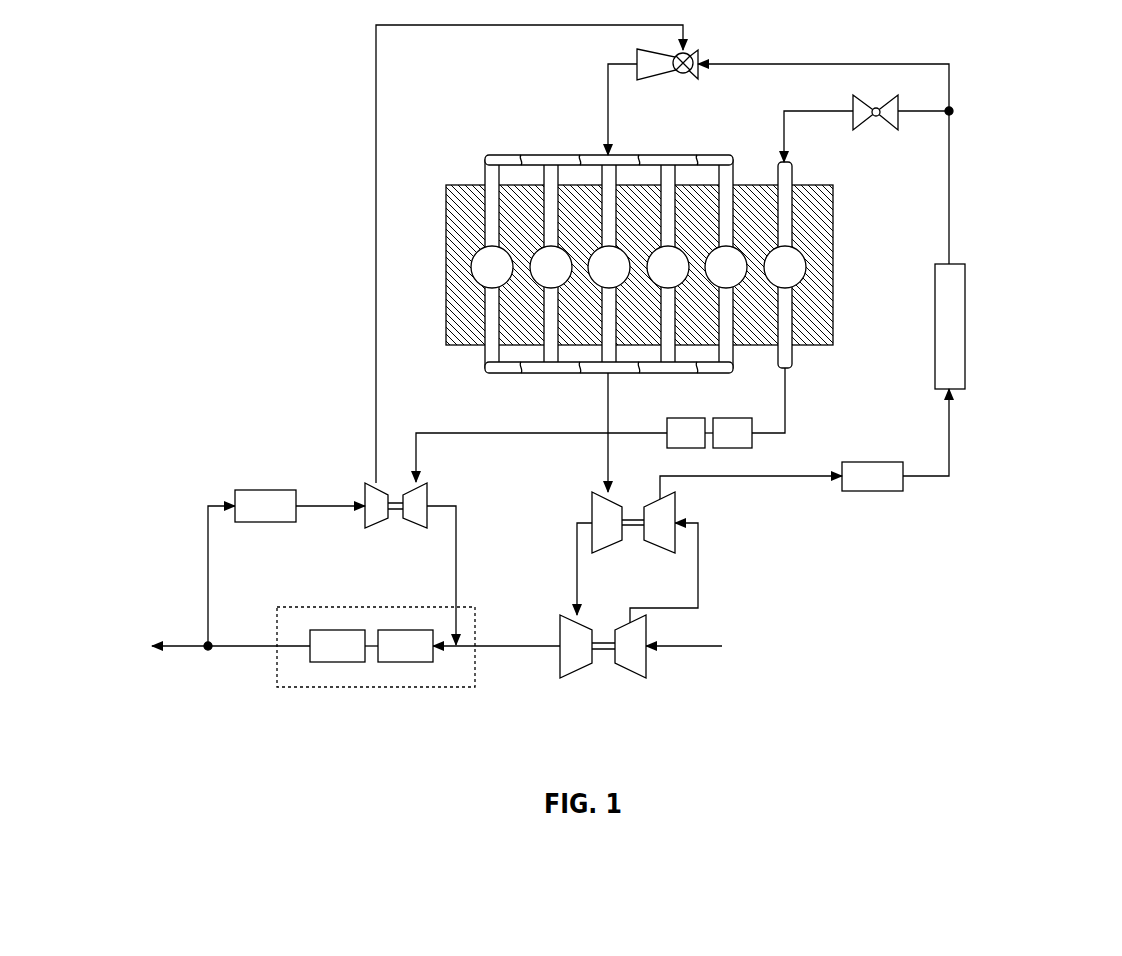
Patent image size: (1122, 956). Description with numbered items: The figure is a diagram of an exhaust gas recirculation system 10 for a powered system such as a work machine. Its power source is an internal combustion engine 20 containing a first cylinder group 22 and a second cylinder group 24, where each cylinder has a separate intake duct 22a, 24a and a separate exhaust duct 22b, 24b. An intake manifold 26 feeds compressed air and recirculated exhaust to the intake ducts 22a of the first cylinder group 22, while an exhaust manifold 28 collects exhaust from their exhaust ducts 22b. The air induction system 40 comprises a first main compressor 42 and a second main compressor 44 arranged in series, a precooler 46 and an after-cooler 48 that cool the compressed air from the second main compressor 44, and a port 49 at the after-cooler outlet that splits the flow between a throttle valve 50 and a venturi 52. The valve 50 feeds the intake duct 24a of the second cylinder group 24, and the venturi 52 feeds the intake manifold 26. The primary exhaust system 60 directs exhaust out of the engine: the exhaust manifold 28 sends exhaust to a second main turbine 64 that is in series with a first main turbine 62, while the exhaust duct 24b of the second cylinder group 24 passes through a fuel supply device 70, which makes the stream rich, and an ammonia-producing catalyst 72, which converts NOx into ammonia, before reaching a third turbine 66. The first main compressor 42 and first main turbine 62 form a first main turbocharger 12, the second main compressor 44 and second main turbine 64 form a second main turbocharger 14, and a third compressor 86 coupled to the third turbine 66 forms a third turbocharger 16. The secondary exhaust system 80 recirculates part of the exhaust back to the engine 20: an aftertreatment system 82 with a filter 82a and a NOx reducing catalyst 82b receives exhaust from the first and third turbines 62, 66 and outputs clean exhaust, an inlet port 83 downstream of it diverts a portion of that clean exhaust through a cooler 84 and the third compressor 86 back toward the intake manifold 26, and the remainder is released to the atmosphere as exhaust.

The exhaust gas recirculation system 10 is at (1078, 145).
The first main turbocharger 12 is at (580, 653).
The second main turbocharger 14 is at (610, 528).
The third turbocharger 16 is at (394, 502).
The internal combustion engine 20 is at (836, 262).
The first cylinder group 22 is at (609, 267).
The intake duct 22a is at (488, 183).
The exhaust duct 22b is at (488, 347).
The second cylinder group 24 is at (785, 267).
The intake duct 24a is at (786, 163).
The exhaust duct 24b is at (786, 368).
The intake manifold 26 is at (497, 157).
The exhaust manifold 28 is at (485, 378).
The air induction system 40 is at (811, 360).
The first main compressor 42 is at (637, 680).
The second main compressor 44 is at (662, 555).
The precooler 46 is at (872, 476).
The after-cooler 48 is at (950, 326).
The port 49 is at (952, 116).
The valve 50 is at (876, 119).
The venturi 52 is at (690, 51).
The primary exhaust system 60 is at (507, 688).
The first main turbine 62 is at (566, 680).
The second main turbine 64 is at (600, 555).
The third turbine 66 is at (428, 489).
The fuel supply device 70 is at (749, 408).
The ammonia-producing catalyst 72 is at (690, 433).
The secondary exhaust system 80 is at (271, 511).
The aftertreatment system 82 is at (376, 675).
The filter 82a is at (337, 646).
The catalyst 82b is at (405, 646).
The inlet port 83 is at (209, 652).
The cooler 84 is at (265, 506).
The third compressor 86 is at (370, 530).